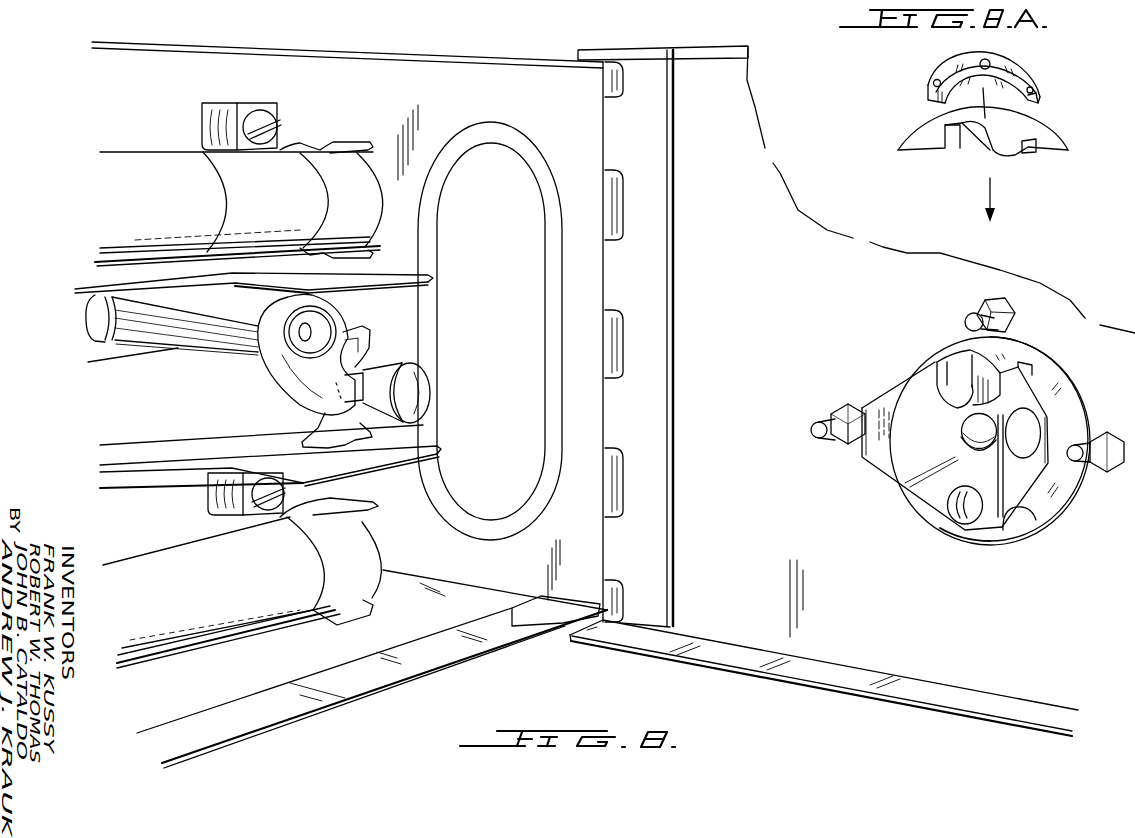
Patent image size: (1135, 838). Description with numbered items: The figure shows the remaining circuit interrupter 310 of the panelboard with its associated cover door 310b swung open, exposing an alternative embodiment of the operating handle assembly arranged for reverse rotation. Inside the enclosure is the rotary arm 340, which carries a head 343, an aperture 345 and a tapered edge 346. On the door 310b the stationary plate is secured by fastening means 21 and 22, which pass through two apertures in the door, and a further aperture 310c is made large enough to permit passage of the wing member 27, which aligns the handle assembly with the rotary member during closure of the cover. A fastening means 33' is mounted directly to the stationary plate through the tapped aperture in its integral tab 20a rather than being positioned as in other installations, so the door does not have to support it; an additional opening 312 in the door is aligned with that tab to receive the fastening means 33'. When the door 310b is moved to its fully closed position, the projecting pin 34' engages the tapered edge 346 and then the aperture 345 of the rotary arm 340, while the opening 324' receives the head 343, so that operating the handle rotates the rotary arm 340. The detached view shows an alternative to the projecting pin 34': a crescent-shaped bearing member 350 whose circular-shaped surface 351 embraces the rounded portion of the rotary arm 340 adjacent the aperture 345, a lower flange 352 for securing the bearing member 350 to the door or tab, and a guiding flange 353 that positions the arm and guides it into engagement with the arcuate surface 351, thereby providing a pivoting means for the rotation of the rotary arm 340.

In FIG. 8, the circuit interrupter 310 is at (858, 701).
In FIG. 8, the rotary arm 340 is at (183, 352).
In FIG. 8, the head 343 is at (422, 392).
In FIG. 8, the aperture 345 is at (312, 328).
In FIG. 8, the tapered edge 346 is at (308, 371).
In FIG. 8A, the crescent-shaped bearing member 350 is at (985, 88).
In FIG. 8A, the circular-shaped surface 351 is at (1004, 114).
In FIG. 8A, the lower flange 352 is at (1010, 66).
In FIG. 8A, the guiding flange 353 is at (930, 93).
In FIG. 8A, the saddle plate 20a is at (1040, 147).
In FIG. 8A, the fastening means 33' is at (964, 315).
In FIG. 8A, the projecting pin 34' is at (955, 326).
In FIG. 8A, the opening 324' is at (940, 379).
In FIG. 8A, the fastening member 21 is at (836, 421).
In FIG. 8A, the fastening member 22 is at (1103, 432).
In FIG. 8A, the opening 312 is at (960, 443).
In FIG. 8A, the wing member 27 is at (876, 480).
In FIG. 8A, the aperture 310c is at (1060, 500).
In FIG. 8A, the door 310b is at (967, 453).